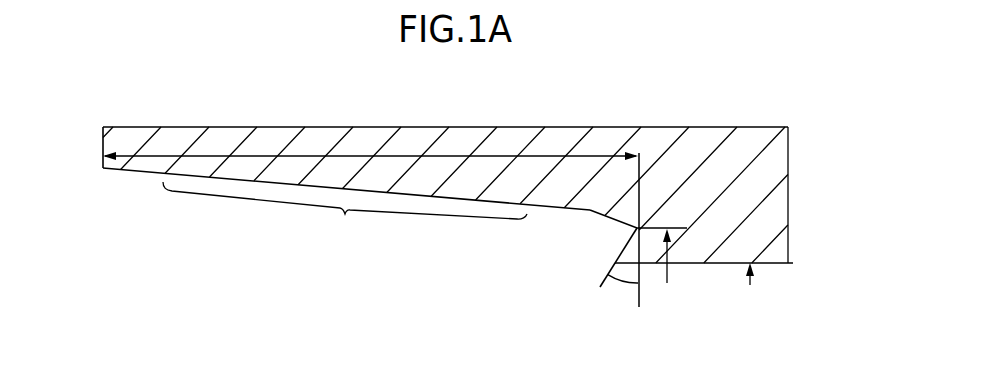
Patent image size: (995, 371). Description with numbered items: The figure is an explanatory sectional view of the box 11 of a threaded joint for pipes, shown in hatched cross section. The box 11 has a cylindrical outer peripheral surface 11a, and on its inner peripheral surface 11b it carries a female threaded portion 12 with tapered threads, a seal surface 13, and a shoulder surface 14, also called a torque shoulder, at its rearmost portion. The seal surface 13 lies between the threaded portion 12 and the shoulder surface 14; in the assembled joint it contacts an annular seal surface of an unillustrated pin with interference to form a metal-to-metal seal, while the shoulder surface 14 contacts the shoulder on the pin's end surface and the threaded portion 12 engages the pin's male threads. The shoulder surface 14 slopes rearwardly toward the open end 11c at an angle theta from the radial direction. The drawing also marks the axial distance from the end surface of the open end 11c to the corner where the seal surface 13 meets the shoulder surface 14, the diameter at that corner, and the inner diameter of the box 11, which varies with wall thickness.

The box 11 is at (602, 108).
The outer peripheral surface 11a is at (473, 127).
The inner peripheral surface 11b is at (145, 172).
The open end 11c is at (102, 150).
The female threaded portion 12 is at (345, 215).
The seal surface 13 is at (633, 229).
The shoulder surface 14 is at (619, 256).